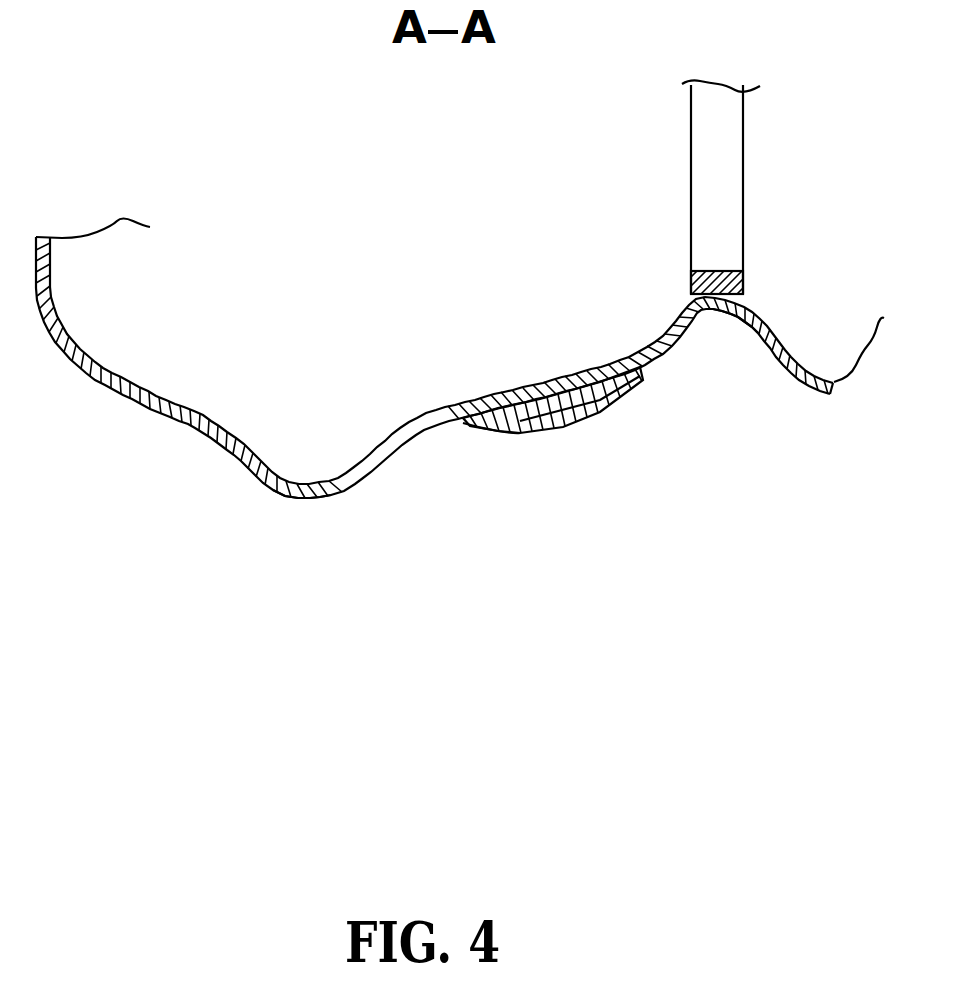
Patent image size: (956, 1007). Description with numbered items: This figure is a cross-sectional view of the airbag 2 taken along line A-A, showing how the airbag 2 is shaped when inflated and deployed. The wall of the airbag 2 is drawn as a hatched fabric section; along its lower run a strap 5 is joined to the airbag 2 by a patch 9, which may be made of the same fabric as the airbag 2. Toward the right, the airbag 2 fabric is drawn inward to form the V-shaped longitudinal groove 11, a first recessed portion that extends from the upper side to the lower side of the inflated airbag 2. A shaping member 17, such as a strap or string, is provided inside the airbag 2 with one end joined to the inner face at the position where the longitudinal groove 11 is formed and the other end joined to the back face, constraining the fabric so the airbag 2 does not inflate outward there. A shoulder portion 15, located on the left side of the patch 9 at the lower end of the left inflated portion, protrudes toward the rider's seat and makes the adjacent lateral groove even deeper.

The airbag 2 is at (107, 389).
The strap 5 is at (549, 403).
The patch 9 is at (510, 434).
The longitudinal groove 11 is at (714, 306).
The shoulder portion 15 is at (310, 498).
The shaping member 17 is at (743, 193).